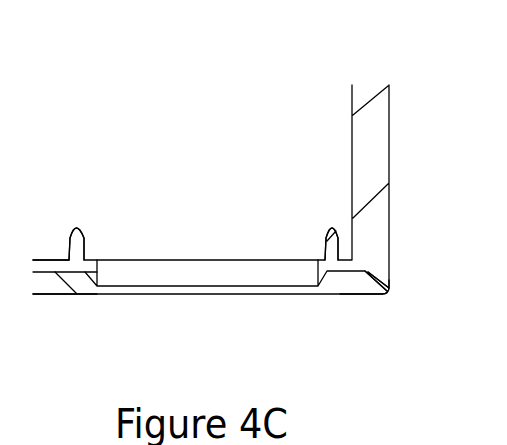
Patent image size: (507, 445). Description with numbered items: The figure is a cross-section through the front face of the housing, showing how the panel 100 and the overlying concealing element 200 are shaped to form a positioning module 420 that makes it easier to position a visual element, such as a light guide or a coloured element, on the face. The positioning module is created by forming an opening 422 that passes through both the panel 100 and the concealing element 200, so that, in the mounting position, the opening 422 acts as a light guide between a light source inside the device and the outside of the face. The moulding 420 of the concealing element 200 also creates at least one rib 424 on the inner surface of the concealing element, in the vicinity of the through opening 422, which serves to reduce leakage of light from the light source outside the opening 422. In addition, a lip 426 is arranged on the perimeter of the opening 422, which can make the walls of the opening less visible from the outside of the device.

The positioning module 420 is at (300, 152).
The opening 422 is at (183, 268).
The rib 424 is at (81, 234).
The lip 426 is at (321, 280).
The concealing element 200 is at (53, 265).
The panel 100 is at (72, 282).